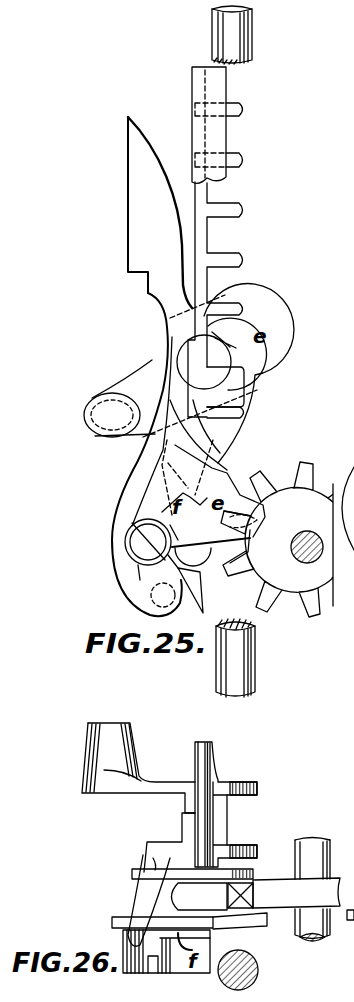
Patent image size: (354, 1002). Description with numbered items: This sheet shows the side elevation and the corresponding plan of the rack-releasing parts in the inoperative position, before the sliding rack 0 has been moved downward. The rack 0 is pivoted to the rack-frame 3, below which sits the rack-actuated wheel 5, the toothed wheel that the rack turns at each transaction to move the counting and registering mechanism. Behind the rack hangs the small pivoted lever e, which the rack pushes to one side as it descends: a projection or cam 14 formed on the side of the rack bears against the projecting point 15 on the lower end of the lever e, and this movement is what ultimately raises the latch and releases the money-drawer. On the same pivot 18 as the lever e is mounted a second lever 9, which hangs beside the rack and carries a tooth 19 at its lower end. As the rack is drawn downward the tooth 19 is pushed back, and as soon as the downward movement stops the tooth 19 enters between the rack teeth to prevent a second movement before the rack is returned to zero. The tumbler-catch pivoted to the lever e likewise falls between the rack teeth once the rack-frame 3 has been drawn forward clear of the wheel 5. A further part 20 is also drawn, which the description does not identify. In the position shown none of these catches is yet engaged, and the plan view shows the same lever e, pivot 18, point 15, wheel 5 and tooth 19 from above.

In FIG. 25, the rack-frame 3 is at (244, 351).
In FIG. 26, the rack-frame 3 is at (247, 970).
In FIG. 25, the toothed bar 0 is at (221, 251).
In FIG. 25, the blade 20 is at (160, 212).
In FIG. 25, the lever 9 is at (203, 450).
In FIG. 26, the lever 9 is at (182, 914).
In FIG. 25, the pivot 18 is at (180, 362).
In FIG. 26, the pivot 18 is at (138, 768).
In FIG. 25, the projection or cam 14 is at (192, 382).
In FIG. 25, the tooth 19 is at (213, 526).
In FIG. 26, the tooth 19 is at (200, 896).
In FIG. 25, the projecting point 15 is at (258, 518).
In FIG. 26, the projecting point 15 is at (248, 933).
In FIG. 25, the rack-actuated wheel 5 is at (287, 539).
In FIG. 26, the rack-actuated wheel 5 is at (291, 890).
In FIG. 26, the lever e is at (200, 807).